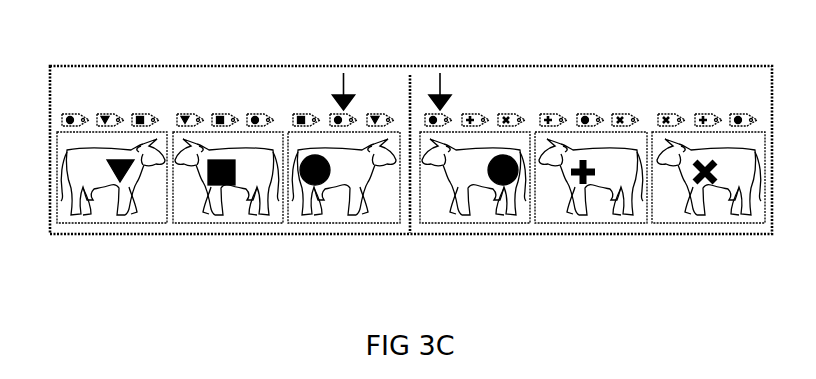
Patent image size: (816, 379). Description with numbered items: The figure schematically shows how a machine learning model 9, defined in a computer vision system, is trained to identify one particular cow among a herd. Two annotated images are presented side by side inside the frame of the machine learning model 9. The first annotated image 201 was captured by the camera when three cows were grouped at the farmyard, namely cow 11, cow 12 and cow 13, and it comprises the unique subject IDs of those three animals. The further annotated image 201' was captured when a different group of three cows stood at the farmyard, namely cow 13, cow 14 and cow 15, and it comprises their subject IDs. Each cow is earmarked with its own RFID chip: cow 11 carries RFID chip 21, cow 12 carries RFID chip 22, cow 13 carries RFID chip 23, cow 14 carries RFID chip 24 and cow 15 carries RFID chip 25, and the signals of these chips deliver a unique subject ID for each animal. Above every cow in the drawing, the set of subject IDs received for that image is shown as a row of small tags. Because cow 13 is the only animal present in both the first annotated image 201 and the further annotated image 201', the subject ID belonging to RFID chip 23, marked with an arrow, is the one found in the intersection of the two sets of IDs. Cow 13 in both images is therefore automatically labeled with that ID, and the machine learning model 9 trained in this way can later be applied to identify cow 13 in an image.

The machine learning model 9 is at (230, 65).
The cow 11 is at (143, 185).
The cow 12 is at (197, 187).
The cow 13 is at (367, 185).
The cow 14 is at (565, 177).
The cow 15 is at (680, 183).
The RFID chip 21 is at (110, 113).
The RFID chip 22 is at (146, 113).
The RFID chip 23 is at (76, 113).
The RFID chip 24 is at (476, 113).
The RFID chip 25 is at (512, 113).
The first annotated image 201 is at (228, 203).
The further annotated image 201' is at (592, 203).